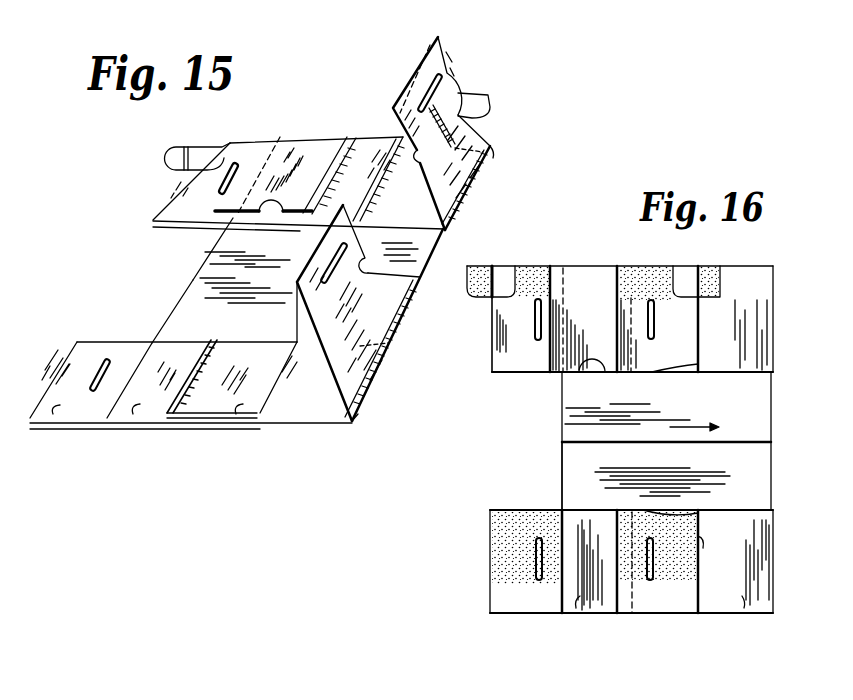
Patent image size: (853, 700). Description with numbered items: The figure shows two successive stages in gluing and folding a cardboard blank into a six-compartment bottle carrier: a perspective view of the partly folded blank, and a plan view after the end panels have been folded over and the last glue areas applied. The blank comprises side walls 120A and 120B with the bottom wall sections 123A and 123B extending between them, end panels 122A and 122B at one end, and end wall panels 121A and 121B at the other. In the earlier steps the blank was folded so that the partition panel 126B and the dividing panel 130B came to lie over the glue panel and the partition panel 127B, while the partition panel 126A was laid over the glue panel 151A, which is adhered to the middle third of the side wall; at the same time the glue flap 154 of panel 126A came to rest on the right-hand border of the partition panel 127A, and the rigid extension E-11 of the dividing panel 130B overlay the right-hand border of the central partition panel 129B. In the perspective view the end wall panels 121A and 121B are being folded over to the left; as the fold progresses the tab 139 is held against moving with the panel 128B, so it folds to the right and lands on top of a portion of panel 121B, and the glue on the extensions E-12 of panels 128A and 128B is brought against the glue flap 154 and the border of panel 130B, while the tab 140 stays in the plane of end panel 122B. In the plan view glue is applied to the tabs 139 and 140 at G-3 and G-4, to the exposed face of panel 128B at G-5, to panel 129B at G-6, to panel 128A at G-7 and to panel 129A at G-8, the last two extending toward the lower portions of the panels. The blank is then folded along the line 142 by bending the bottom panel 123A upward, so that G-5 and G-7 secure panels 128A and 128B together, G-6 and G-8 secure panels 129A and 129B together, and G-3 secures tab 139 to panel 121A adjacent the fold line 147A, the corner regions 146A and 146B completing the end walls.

In FIG. 15, the side wall 120A is at (302, 408).
In FIG. 15, the side wall 120B is at (408, 223).
In FIG. 15, the end wall panel 121A is at (360, 363).
In FIG. 16, the end wall panel 121A is at (741, 601).
In FIG. 15, the end wall panel 121B is at (462, 165).
In FIG. 16, the end wall panel 121B is at (738, 276).
In FIG. 15, the end panel 122A is at (95, 429).
In FIG. 15, the end panel 122B is at (197, 229).
In FIG. 15, the bottom panel 123A is at (178, 300).
In FIG. 16, the bottom panel 123A is at (585, 470).
In FIG. 15, the bottom wall section 123B is at (440, 250).
In FIG. 16, the bottom wall section 123B is at (585, 425).
In FIG. 15, the partition panel 126A is at (238, 414).
In FIG. 15, the partition panel 126B is at (352, 135).
In FIG. 15, the partition panel 127A is at (134, 414).
In FIG. 16, the partition panel 127A is at (578, 608).
In FIG. 15, the partition panel 127B is at (271, 213).
In FIG. 16, the partition panel 127B is at (590, 371).
In FIG. 15, the central partition panel 128A is at (322, 308).
In FIG. 16, the central partition panel 128A is at (648, 602).
In FIG. 15, the central partition panel 128B is at (448, 73).
In FIG. 16, the central partition panel 128B is at (640, 365).
In FIG. 15, the central partition panel 129A is at (55, 414).
In FIG. 16, the central partition panel 129A is at (508, 597).
In FIG. 15, the central partition panel 129B is at (178, 184).
In FIG. 16, the central partition panel 129B is at (508, 363).
In FIG. 15, the dividing panel 130B is at (297, 140).
In FIG. 16, the dividing panel 130B is at (578, 275).
In FIG. 15, the tab 139 is at (484, 102).
In FIG. 16, the tab 139 is at (704, 290).
In FIG. 15, the tab 140 is at (170, 155).
In FIG. 16, the tab 140 is at (484, 300).
In FIG. 16, the fold line 142 is at (676, 444).
In FIG. 15, the corner flap A 146A is at (362, 413).
In FIG. 15, the corner flap B 146B is at (492, 168).
In FIG. 16, the fold line 147A is at (698, 536).
In FIG. 15, the glue panel 151A is at (210, 421).
In FIG. 15, the glue flap 154 is at (213, 343).
In FIG. 15, the extension E-11 is at (274, 135).
In FIG. 16, the extension E-11 is at (562, 268).
In FIG. 15, the extension E-12 is at (442, 40).
In FIG. 16, the extension E-12 is at (628, 366).
In FIG. 16, the glue area G-3 is at (710, 270).
In FIG. 16, the glue area G-4 is at (472, 287).
In FIG. 16, the glue area G-5 is at (640, 272).
In FIG. 16, the glue area G-6 is at (528, 270).
In FIG. 16, the glue area G-7 is at (681, 570).
In FIG. 16, the glue area G-8 is at (510, 528).